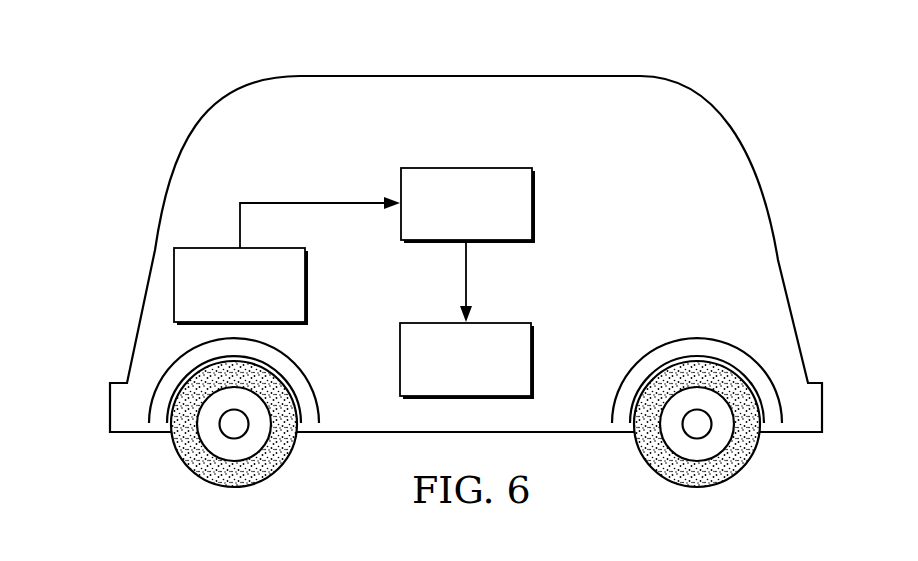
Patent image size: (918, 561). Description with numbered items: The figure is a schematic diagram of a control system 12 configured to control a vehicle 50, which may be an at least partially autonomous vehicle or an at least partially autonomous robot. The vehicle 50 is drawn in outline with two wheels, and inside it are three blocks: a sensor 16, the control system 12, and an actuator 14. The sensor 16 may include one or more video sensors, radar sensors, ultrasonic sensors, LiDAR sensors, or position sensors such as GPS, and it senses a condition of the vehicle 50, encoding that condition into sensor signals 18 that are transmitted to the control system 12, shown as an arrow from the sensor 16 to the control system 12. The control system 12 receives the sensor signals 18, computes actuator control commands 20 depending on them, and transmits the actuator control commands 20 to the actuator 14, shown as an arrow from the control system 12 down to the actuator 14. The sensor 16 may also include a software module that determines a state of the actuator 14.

The vehicle 50 is at (116, 28).
The control system 12 is at (465, 168).
The actuator 14 is at (400, 359).
The sensor 16 is at (307, 287).
The sensor signals 18 is at (319, 202).
The actuator control commands 20 is at (465, 283).